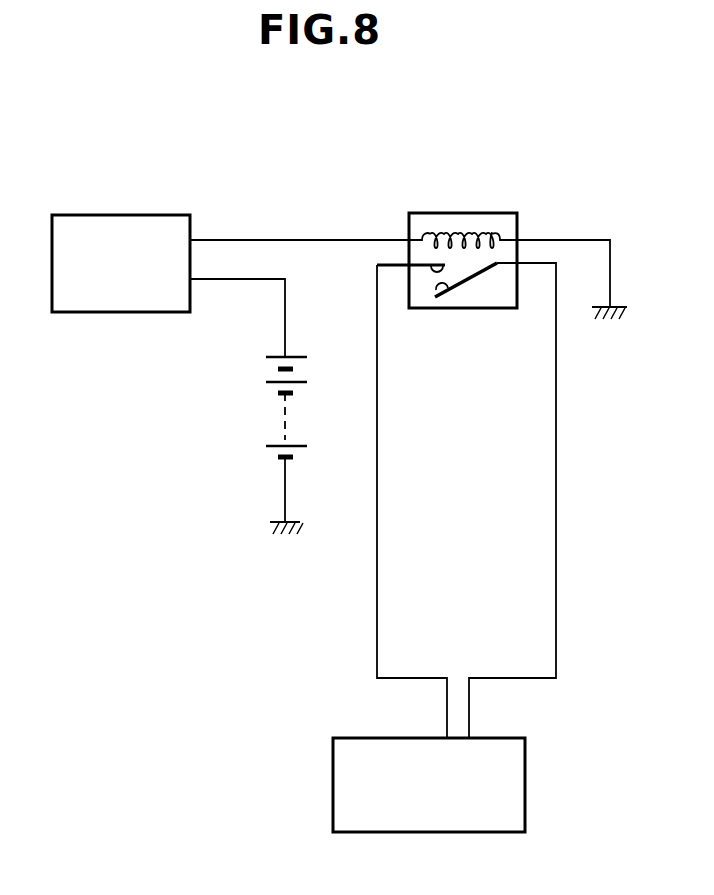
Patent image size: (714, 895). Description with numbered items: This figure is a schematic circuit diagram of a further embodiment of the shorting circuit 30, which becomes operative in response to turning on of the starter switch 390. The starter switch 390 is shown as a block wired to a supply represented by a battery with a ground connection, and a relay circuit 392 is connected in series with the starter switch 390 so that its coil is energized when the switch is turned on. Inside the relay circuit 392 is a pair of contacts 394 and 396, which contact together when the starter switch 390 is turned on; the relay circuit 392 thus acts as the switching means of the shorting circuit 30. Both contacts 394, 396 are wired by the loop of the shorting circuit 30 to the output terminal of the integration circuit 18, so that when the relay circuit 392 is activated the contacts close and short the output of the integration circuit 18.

The starter switch 390 is at (153, 215).
The relay circuit 392 is at (458, 213).
The contact 394 is at (428, 268).
The contact 396 is at (470, 282).
The shorting circuit 30 is at (558, 365).
The integration circuit 18 is at (525, 770).